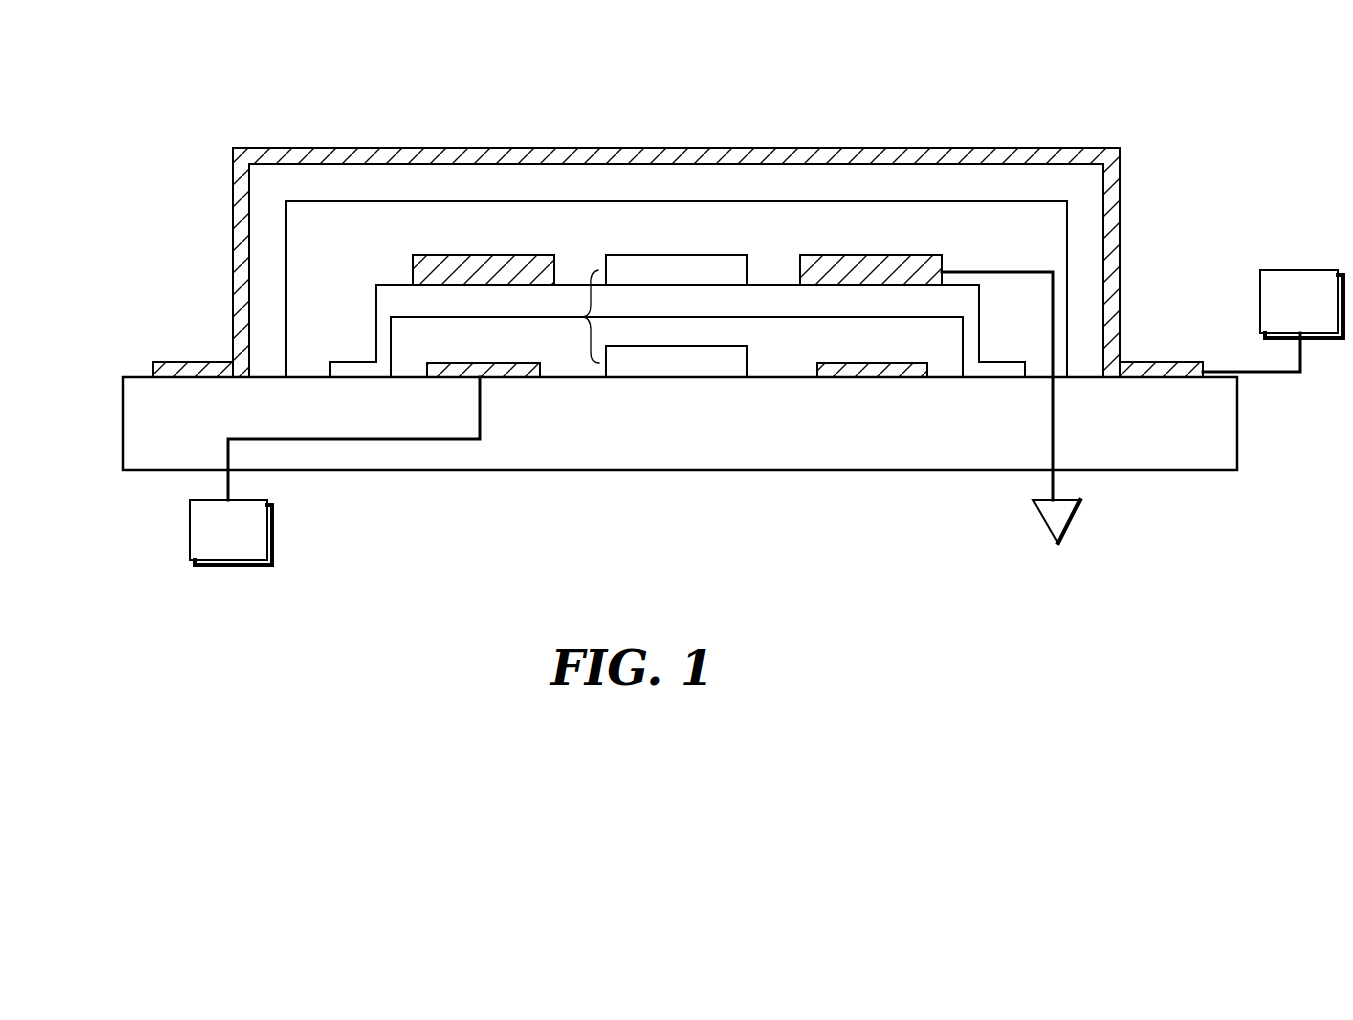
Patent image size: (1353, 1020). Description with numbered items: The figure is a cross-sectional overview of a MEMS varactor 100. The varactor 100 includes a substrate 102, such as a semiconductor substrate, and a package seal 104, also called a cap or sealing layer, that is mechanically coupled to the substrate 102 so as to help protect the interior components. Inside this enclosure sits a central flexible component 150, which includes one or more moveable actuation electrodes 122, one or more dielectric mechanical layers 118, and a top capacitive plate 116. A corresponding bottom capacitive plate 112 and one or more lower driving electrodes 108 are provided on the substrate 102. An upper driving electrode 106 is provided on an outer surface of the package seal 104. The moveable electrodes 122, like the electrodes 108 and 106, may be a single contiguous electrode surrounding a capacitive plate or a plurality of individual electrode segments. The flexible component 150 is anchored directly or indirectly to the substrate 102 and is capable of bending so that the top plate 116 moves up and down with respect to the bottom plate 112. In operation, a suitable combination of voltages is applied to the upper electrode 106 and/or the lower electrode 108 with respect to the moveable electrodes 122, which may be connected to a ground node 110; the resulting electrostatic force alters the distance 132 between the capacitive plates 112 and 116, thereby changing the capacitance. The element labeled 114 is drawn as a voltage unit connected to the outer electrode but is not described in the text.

The MEMS varactor 100 is at (1210, 48).
The substrate 102 is at (615, 455).
The package seal 104 is at (962, 182).
The upper driving electrode 106 is at (632, 155).
The lower driving electrodes 108 is at (519, 377).
The ground node 110 is at (1075, 515).
The bottom capacitive plate 112 is at (643, 377).
The voltage measurement unit 114 is at (1307, 268).
The top capacitive plate 116 is at (699, 264).
The dielectric mechanical layers 118 is at (778, 303).
The moveable actuation electrodes 122 is at (516, 262).
The distance 132 is at (590, 320).
The central flexible component 150 is at (362, 292).